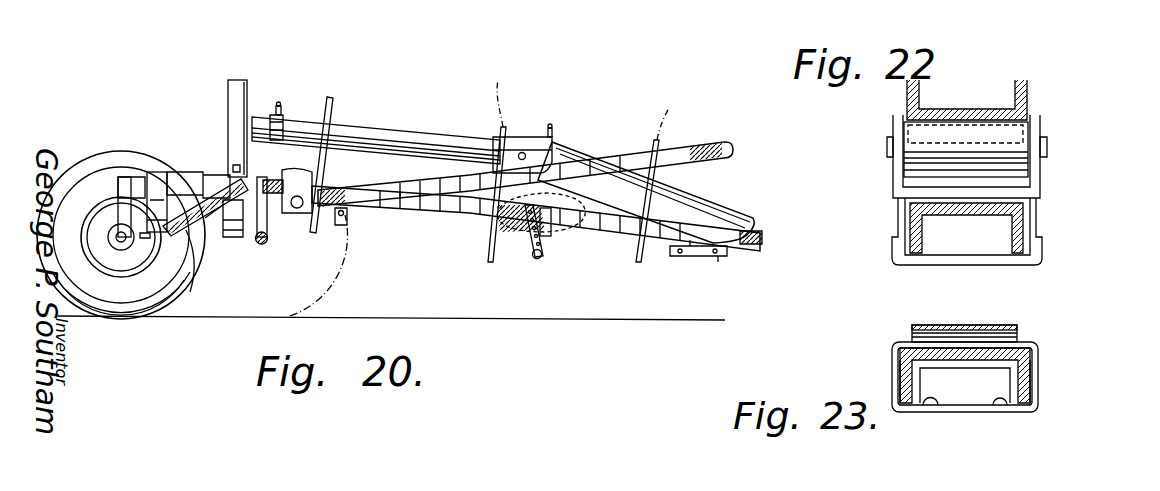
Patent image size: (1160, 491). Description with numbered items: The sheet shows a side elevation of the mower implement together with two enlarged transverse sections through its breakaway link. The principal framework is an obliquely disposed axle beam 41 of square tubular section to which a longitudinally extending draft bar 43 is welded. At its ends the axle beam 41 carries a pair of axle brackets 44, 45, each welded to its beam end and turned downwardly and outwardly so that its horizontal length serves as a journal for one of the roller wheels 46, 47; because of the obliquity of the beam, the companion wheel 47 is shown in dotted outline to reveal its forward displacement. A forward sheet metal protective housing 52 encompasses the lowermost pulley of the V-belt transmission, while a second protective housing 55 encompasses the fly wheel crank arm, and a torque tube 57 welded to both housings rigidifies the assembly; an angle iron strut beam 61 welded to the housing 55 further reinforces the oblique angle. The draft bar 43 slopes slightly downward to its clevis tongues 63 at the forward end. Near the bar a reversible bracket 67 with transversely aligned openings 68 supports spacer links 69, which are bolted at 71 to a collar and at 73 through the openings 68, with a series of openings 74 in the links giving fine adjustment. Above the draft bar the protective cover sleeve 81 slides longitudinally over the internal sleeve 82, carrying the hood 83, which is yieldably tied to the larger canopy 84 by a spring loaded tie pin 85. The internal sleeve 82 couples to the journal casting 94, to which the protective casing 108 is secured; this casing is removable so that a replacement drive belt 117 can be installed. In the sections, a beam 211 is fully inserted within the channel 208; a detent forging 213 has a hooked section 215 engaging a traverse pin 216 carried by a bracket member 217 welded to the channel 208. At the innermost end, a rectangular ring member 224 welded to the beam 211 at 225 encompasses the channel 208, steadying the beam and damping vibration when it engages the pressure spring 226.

In FIG. 20, the roller wheel 46 is at (68, 192).
In FIG. 20, the axle bracket 44 is at (90, 172).
In FIG. 20, the axle beam 41 is at (132, 178).
In FIG. 20, the protective housing 55 is at (160, 196).
In FIG. 20, the forward sheet metal protective housing 52 is at (236, 238).
In FIG. 20, the angle iron strut beam 61 is at (206, 236).
In FIG. 20, the torque tube 57 is at (196, 268).
In FIG. 20, the protective casing 108 is at (250, 88).
In FIG. 20, the journal casting 94 is at (273, 113).
In FIG. 20, the internal sleeve 82 is at (284, 118).
In FIG. 20, the protective cover sleeve 81 is at (437, 141).
In FIG. 20, the replacement drive belt 117 is at (334, 100).
In FIG. 20, the hood 83 is at (520, 137).
In FIG. 20, the spring loaded tie pin 85 is at (553, 130).
In FIG. 20, the bolt 71 is at (530, 156).
In FIG. 20, the canopy 84 is at (706, 201).
In FIG. 20, the draft bar 43 is at (443, 213).
In FIG. 20, the openings 74 is at (483, 213).
In FIG. 20, the spacer link 69 is at (560, 226).
In FIG. 20, the anchor bolt 73 is at (552, 231).
In FIG. 20, the reversible bracket 67 is at (541, 258).
In FIG. 20, the openings 68 is at (534, 259).
In FIG. 20, the clevis tongues 63 is at (700, 258).
In FIG. 20, the axle bracket 45 is at (262, 244).
In FIG. 20, the roller wheel 47 is at (332, 297).
In FIG. 22, the detent forging 213 is at (1028, 82).
In FIG. 22, the hooked section 215 is at (962, 115).
In FIG. 22, the traverse pin 216 is at (1032, 176).
In FIG. 22, the bracket member 217 is at (896, 172).
In FIG. 22, the channel 208 is at (906, 216).
In FIG. 23, the channel 208 is at (900, 360).
In FIG. 22, the beam 211 is at (958, 212).
In FIG. 23, the beam 211 is at (959, 364).
In FIG. 23, the ring member 224 is at (1034, 345).
In FIG. 23, the pressure spring 226 is at (927, 326).
In FIG. 23, the weld 225 is at (930, 406).